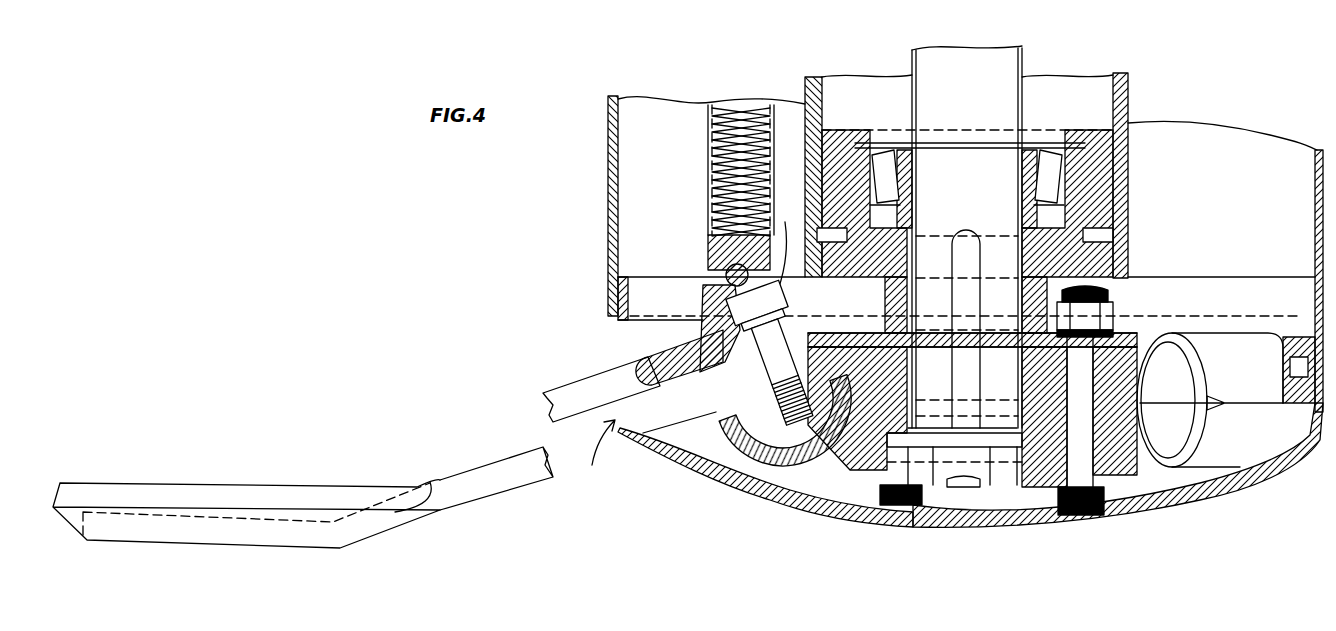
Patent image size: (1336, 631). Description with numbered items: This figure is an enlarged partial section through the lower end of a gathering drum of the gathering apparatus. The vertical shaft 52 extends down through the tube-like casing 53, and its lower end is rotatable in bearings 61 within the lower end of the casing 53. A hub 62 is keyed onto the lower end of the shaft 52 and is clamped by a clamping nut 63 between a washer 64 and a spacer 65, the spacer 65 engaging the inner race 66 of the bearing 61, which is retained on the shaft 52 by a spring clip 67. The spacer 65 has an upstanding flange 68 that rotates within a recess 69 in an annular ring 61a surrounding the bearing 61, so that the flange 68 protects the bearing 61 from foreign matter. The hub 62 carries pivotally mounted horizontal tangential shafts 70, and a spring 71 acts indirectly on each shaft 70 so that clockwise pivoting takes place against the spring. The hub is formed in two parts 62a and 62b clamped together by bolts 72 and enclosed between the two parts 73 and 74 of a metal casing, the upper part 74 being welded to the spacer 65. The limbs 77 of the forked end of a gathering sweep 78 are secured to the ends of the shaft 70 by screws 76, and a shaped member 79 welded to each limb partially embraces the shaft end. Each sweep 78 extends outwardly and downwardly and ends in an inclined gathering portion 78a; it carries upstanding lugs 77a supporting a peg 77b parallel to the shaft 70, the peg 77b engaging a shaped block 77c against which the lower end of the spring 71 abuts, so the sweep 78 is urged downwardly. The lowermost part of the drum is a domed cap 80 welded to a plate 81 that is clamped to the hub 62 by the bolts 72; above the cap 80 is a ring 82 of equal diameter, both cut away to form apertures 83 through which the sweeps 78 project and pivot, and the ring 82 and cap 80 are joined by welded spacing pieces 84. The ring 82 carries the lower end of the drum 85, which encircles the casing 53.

The vertical shaft 52 is at (943, 80).
The casing 53 is at (810, 82).
The bearings 61 is at (887, 143).
The annular ring 61a is at (1117, 130).
The hub 62 is at (853, 447).
The hub part 62a is at (1137, 475).
The hub part 62b is at (1135, 345).
The clamping nut 63 is at (920, 500).
The washer 64 is at (1013, 445).
The spacer 65 is at (1133, 278).
The inner race 66 is at (1035, 145).
The spring clip 67 is at (1003, 143).
The upstanding flange 68 is at (1107, 227).
The recess 69 is at (1103, 193).
The shaft 70 is at (730, 453).
The spring 71 is at (712, 160).
The bolts 72 is at (1105, 455).
The casing part 73 is at (873, 467).
The upper casing part 74 is at (1110, 380).
The screws 76 is at (783, 246).
The limbs 77 is at (730, 345).
The upstanding lug 77a is at (713, 322).
The peg 77b is at (725, 265).
The shaped block 77c is at (712, 236).
The gathering sweep 78 is at (587, 400).
The inclined gathering portion 78a is at (273, 530).
The shaped member 79 is at (806, 332).
The domed cap 80 is at (955, 490).
The plate 81 is at (1205, 470).
The ring 82 is at (1297, 282).
The apertures 83 is at (594, 457).
The spacing pieces 84 is at (1293, 337).
The drum 85 is at (1317, 213).